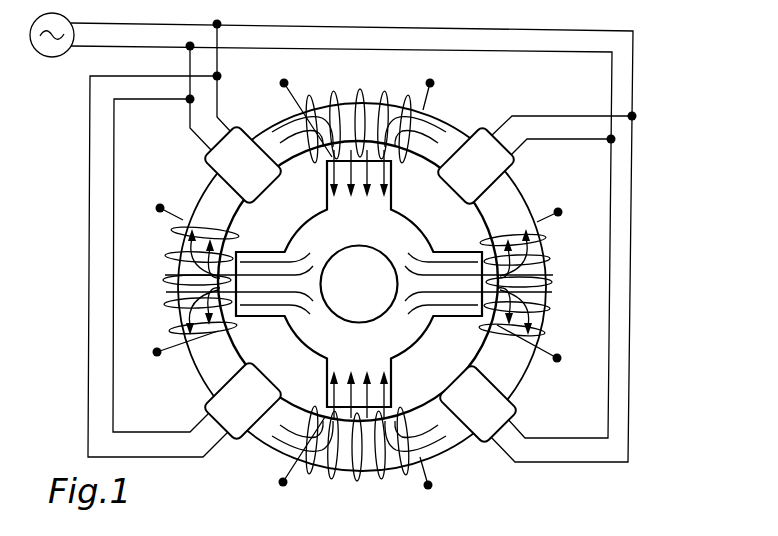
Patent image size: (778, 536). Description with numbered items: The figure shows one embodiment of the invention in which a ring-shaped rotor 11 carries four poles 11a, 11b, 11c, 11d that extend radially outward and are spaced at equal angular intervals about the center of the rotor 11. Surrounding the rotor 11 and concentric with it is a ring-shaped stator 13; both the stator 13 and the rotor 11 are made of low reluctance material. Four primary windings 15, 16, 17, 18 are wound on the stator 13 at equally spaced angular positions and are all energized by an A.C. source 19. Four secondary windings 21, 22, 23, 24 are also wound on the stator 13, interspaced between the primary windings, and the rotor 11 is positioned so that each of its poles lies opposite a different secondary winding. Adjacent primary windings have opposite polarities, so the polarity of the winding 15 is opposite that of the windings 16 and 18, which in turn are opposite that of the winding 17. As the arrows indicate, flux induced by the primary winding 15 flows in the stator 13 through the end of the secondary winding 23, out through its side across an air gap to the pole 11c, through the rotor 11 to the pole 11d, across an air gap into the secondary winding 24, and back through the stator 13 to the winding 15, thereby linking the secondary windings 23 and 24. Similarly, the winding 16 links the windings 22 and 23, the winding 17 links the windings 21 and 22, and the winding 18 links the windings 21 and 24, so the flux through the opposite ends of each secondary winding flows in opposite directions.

The rotor 11 is at (293, 336).
The pole 11a is at (393, 393).
The pole 11b is at (257, 251).
The pole 11c is at (393, 178).
The pole 11d is at (455, 256).
The stator 13 is at (515, 375).
The primary winding 15 is at (512, 172).
The primary winding 16 is at (244, 128).
The primary winding 17 is at (234, 442).
The primary winding 18 is at (512, 406).
The A.C. source 19 is at (67, 19).
The secondary winding 21 is at (334, 476).
The secondary winding 22 is at (167, 264).
The secondary winding 23 is at (362, 87).
The secondary winding 24 is at (549, 244).